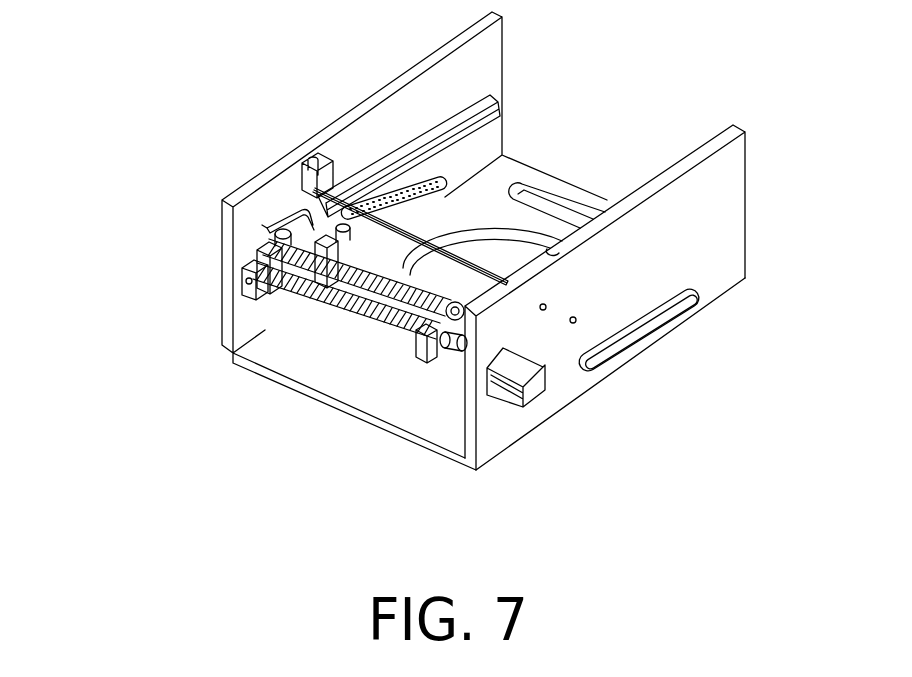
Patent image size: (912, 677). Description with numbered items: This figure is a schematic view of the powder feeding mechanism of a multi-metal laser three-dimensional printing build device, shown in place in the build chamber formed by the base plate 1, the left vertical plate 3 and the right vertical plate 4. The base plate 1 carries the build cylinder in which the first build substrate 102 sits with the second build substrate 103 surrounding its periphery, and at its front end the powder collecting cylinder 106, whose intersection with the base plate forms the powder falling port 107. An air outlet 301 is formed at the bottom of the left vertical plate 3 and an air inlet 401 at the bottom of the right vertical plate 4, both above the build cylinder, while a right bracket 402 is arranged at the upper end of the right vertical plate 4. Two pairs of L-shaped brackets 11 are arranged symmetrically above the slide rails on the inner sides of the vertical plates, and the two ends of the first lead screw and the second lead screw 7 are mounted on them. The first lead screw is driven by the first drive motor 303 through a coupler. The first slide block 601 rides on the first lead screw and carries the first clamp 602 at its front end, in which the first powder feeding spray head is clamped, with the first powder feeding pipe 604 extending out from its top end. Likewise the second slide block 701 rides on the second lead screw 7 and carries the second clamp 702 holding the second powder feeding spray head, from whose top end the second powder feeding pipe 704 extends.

The base plate 1 is at (525, 165).
The left vertical plate 3 is at (730, 210).
The right vertical plate 4 is at (357, 135).
The second lead screw 7 is at (287, 285).
The L-shaped bracket 11 is at (247, 263).
The first build substrate 102 is at (512, 276).
The second build substrate 103 is at (555, 252).
The powder collecting cylinder 106 is at (550, 187).
The powder falling port 107 is at (583, 210).
The air outlet 301 is at (660, 333).
The first drive motor 303 is at (532, 402).
The air inlet 401 is at (423, 189).
The right bracket 402 is at (310, 155).
The first slide block 601 is at (313, 271).
The first clamp 602 is at (340, 258).
The first powder feeding pipe 604 is at (288, 203).
The second slide block 701 is at (460, 345).
The second clamp 702 is at (425, 362).
The second powder feeding pipe 704 is at (414, 324).